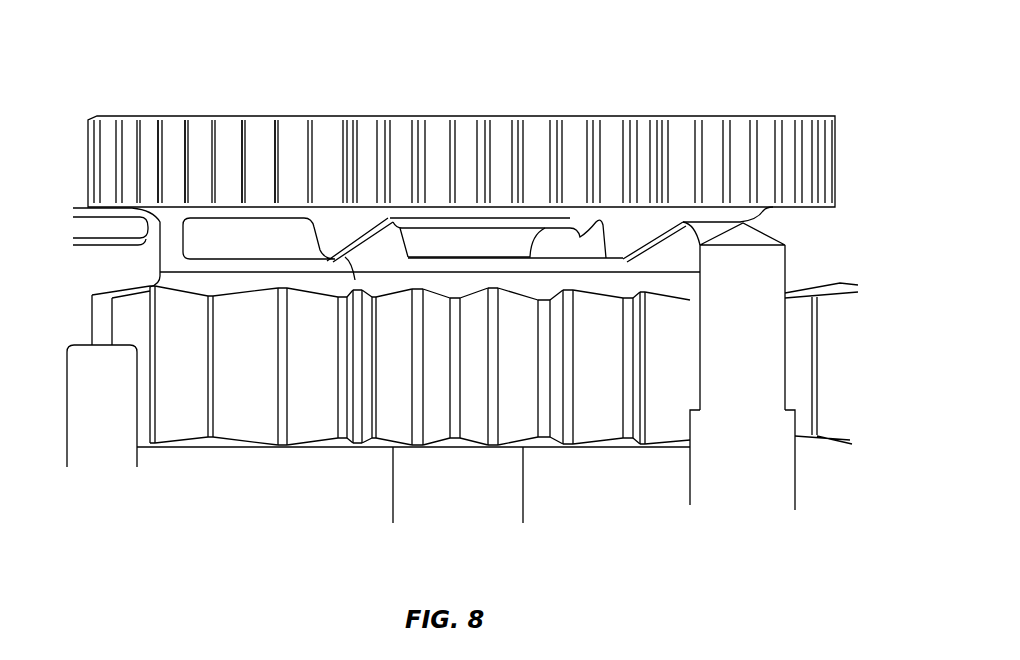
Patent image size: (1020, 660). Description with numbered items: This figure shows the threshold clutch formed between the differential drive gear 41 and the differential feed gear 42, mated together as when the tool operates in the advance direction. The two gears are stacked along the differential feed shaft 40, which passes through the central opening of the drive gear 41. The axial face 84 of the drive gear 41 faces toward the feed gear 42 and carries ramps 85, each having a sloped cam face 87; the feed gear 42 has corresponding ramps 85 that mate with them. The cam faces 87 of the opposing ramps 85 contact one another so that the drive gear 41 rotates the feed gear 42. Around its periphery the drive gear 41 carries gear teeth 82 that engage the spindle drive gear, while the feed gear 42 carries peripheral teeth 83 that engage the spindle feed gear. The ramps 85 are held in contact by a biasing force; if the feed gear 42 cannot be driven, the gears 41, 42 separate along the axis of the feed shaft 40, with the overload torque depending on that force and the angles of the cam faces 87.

The differential feed gear 42 is at (767, 152).
The peripheral teeth 83 is at (265, 118).
The axial face 84 is at (587, 256).
The ramps 85 is at (340, 237).
The cam face 87 is at (373, 232).
The gear teeth 82 is at (278, 368).
The feed shaft 40 is at (500, 488).
The differential drive gear 41 is at (652, 385).